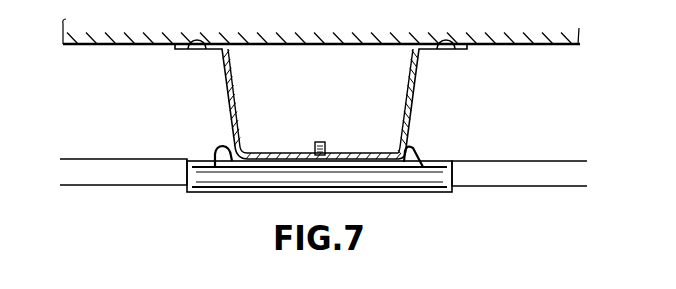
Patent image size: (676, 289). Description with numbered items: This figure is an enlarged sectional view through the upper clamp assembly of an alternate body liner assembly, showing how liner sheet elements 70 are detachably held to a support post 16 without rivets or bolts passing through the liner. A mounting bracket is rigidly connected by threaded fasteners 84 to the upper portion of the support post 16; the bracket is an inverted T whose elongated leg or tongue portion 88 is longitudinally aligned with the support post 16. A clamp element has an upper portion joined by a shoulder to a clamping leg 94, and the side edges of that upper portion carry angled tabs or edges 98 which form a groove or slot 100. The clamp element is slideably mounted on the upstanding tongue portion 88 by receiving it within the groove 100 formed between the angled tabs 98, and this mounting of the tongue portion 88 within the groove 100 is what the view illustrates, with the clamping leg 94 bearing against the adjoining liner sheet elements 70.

The support post 16 is at (228, 96).
The liner sheet element 70 is at (94, 188).
The threaded fastener 84 is at (320, 142).
The tongue portion 88 is at (288, 153).
The clamping leg 94 is at (218, 193).
The angled tab 98 is at (220, 146).
The groove 100 is at (398, 151).